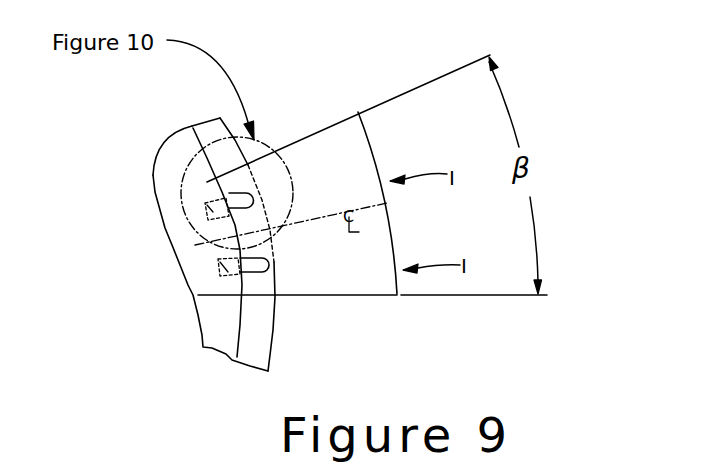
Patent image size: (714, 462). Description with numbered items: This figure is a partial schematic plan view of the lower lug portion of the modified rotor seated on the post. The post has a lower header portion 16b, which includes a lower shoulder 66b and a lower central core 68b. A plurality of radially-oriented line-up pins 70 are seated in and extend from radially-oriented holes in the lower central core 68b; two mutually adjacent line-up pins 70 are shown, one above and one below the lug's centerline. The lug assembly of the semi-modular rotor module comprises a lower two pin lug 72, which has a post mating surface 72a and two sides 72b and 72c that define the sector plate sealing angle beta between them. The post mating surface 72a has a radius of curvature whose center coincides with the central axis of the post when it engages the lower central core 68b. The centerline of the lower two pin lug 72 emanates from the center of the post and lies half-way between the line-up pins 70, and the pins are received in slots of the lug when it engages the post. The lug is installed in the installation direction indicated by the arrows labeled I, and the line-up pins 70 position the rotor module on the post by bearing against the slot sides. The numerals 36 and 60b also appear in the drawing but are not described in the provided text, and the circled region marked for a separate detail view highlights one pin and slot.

The lower header portion 16b is at (285, 364).
The detail region shown in Figure 10 36 is at (330, 138).
The body portion 60b is at (228, 317).
The lower shoulder 66b is at (205, 137).
The lower central core 68b is at (165, 160).
The line-up pins 70 is at (212, 208).
The lower two pin lug 72 is at (333, 267).
The post mating surface 72a is at (237, 248).
The side 72b is at (350, 120).
The side 72c is at (303, 292).